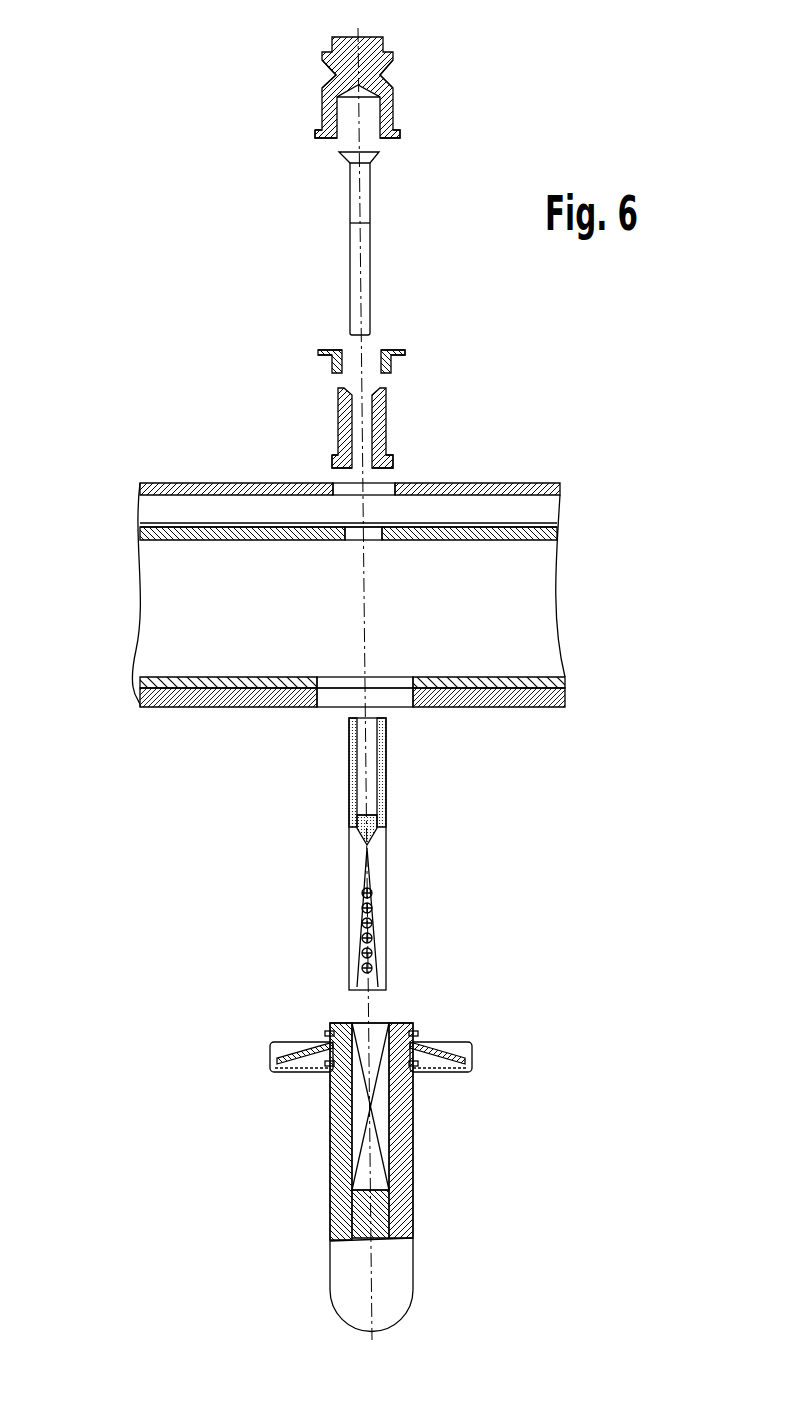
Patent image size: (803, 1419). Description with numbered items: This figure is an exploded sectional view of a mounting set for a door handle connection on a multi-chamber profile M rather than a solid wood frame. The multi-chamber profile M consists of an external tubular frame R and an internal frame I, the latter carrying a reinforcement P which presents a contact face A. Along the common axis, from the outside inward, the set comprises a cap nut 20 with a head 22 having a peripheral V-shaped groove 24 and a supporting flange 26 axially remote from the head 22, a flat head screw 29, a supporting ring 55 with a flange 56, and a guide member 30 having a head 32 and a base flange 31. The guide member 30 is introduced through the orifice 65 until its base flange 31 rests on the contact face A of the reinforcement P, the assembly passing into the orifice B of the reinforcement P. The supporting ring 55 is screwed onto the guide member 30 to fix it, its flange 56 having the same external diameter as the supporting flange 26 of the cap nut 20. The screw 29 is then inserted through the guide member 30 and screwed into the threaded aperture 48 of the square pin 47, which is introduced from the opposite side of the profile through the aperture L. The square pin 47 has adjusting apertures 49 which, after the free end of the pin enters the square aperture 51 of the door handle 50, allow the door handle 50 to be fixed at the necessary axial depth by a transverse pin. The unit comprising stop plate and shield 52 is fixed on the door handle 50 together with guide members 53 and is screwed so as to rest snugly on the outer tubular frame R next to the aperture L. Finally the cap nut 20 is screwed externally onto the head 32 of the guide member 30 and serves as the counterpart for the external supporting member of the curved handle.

The cap nut 20 is at (337, 168).
The head 22 is at (398, 26).
The V-shaped groove 24 is at (383, 75).
The supporting flange 26 is at (402, 131).
The flat head screw 29 is at (352, 217).
The supporting ring 55 is at (303, 348).
The flange 56 is at (404, 352).
The guide member 30 is at (343, 422).
The head 32 is at (404, 407).
The base flange 31 is at (394, 460).
The contact face A is at (168, 481).
The orifice 65 is at (337, 483).
The external tubular frame R is at (562, 481).
The reinforcement P is at (557, 523).
The orifice B is at (345, 537).
The internal frame I is at (557, 533).
The multi-chamber profile M is at (68, 493).
The aperture L is at (327, 682).
The threaded aperture 48 is at (372, 760).
The square pin 47 is at (351, 854).
The adjusting apertures 49 is at (373, 968).
The guide members 53 is at (422, 1057).
The stop plate and shield 52 is at (268, 1073).
The square aperture 51 is at (383, 1117).
The door handle 50 is at (332, 1273).